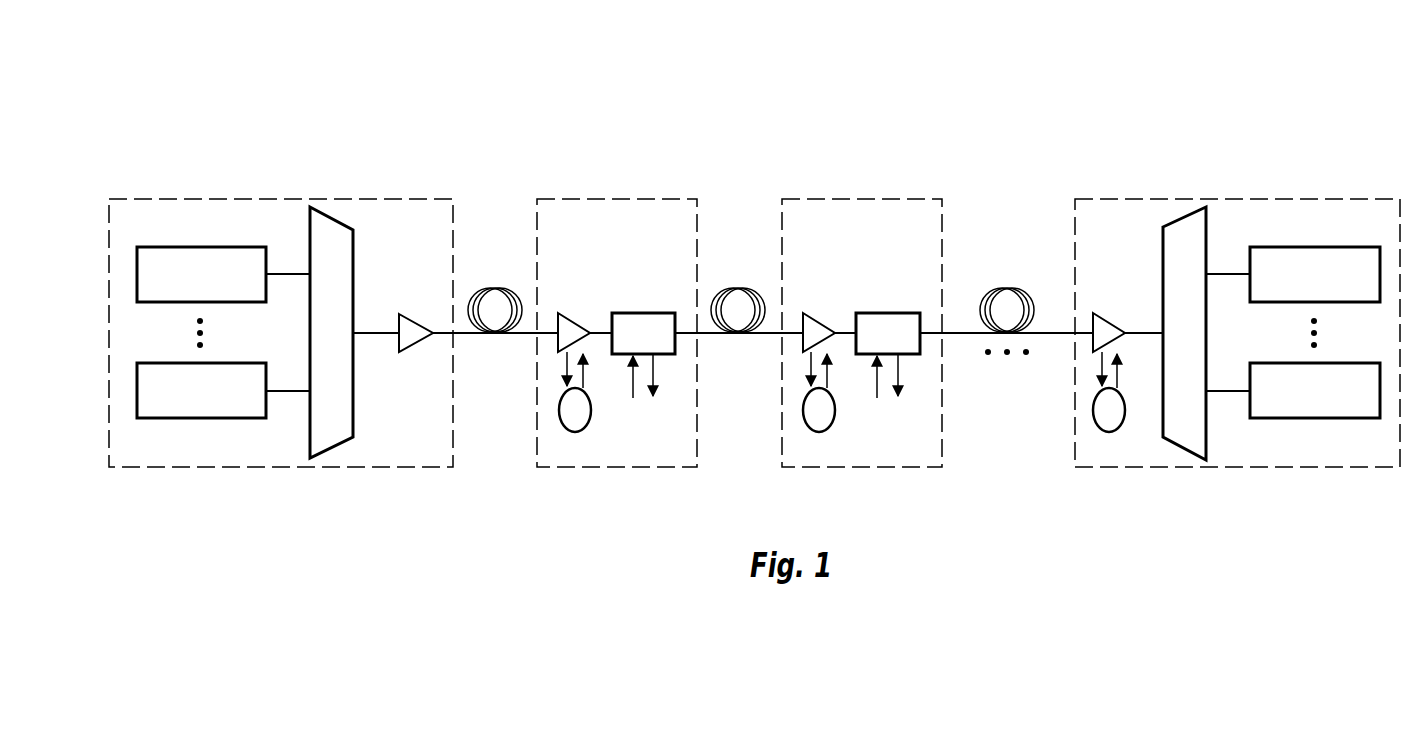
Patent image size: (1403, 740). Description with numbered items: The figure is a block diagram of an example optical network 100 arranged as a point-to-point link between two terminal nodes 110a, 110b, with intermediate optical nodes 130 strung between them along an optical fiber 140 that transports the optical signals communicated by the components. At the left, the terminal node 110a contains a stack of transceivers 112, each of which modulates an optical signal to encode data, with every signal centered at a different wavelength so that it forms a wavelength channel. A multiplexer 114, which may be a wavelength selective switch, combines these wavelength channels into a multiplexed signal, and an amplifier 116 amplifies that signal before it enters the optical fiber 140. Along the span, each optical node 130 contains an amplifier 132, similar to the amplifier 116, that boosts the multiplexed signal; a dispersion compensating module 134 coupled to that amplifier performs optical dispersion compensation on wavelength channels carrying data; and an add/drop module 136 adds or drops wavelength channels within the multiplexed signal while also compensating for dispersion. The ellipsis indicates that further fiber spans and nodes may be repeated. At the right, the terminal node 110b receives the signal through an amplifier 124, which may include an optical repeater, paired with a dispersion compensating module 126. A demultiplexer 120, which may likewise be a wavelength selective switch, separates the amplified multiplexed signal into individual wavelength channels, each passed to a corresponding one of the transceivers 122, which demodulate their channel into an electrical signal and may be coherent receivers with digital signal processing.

The optical network 100 is at (1034, 74).
The terminal node 110a is at (247, 199).
The terminal node 110b is at (1210, 199).
The transceivers 112 is at (160, 247).
The multiplexer 114 is at (341, 216).
The amplifier 116 is at (414, 349).
The demultiplexer 120 is at (1176, 217).
The transceivers 122 is at (1307, 247).
The amplifier 124 is at (1098, 313).
The DCM 126 is at (1117, 428).
The optical nodes 130 is at (603, 199).
The amplifier 132 is at (565, 313).
The DCM 134 is at (583, 428).
The ADM 136 is at (640, 313).
The optical fiber 140 is at (498, 288).